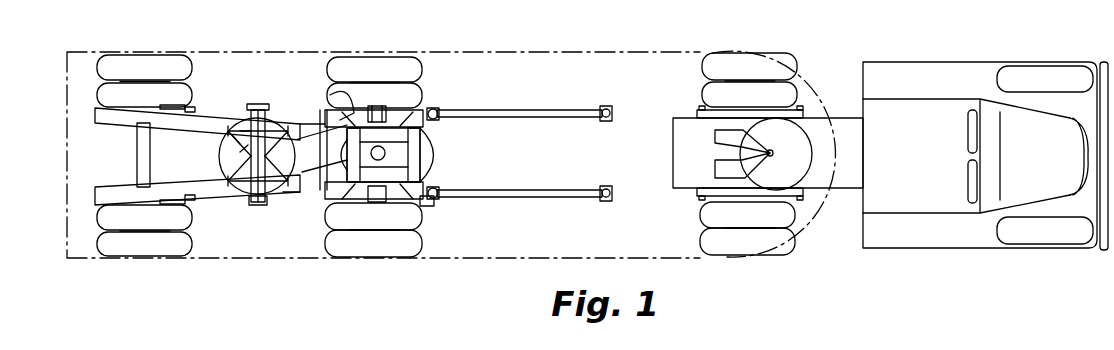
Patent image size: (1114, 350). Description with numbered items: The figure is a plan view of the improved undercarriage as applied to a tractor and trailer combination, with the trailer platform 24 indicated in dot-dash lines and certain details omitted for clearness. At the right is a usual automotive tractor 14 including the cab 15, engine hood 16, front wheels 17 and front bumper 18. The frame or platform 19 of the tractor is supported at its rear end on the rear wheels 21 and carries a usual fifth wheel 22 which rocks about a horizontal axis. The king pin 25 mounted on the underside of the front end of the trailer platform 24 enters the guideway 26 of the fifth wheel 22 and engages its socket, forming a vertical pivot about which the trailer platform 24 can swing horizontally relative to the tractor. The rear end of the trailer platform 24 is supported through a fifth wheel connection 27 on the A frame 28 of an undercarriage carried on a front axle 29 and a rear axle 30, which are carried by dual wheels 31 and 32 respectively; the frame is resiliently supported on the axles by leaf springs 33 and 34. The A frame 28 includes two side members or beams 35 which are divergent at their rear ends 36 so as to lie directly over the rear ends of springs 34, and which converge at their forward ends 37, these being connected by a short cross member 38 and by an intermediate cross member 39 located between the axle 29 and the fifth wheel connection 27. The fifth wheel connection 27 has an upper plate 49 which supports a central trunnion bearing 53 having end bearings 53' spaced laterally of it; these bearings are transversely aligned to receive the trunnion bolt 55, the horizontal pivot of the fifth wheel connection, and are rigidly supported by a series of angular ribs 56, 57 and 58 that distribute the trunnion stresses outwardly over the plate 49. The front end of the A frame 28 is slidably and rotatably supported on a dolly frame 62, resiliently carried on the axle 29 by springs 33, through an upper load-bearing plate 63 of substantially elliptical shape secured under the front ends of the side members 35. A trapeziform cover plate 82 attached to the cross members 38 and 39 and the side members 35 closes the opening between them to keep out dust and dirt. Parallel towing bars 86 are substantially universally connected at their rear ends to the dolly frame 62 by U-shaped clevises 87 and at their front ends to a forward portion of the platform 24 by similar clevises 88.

The automotive tractor 14 is at (978, 62).
The cab 15 is at (936, 156).
The engine hood 16 is at (1022, 156).
The front wheels 17 is at (1040, 66).
The front bumper 18 is at (1100, 250).
The frame or platform 19 is at (843, 182).
The rear wheels 21 is at (792, 60).
The fifth wheel 22 is at (797, 145).
The trailer platform 24 is at (437, 258).
The king pin 25 is at (770, 157).
The guideway 26 is at (742, 147).
The fifth wheel connection 27 is at (217, 153).
The A frame 28 is at (290, 193).
The front axle 29 is at (372, 113).
The rear axle 30 is at (137, 153).
The dual wheels 31 is at (360, 58).
The dual wheels 32 is at (162, 58).
The leaf springs 33 is at (352, 112).
The leaf springs 34 is at (180, 107).
The side members or beams 35 is at (306, 125).
The rear ends 36 is at (95, 115).
The forward ends 37 is at (423, 125).
The short cross member 38 is at (420, 157).
The intermediate cross member 39 is at (352, 165).
The upper plate 49 is at (256, 156).
The central trunnion bearing 53 is at (274, 156).
The end bearings 53' is at (254, 214).
The trunnion bolt 55 is at (258, 104).
The angular rib 56 is at (245, 126).
The angular rib 57 is at (245, 135).
The angular rib 58 is at (240, 150).
The dolly frame 62 is at (432, 204).
The upper load-bearing plate 63 is at (430, 150).
The trapeziform cover plate 82 is at (389, 153).
The parallel towing bars 86 is at (515, 110).
The clevises 87 is at (437, 110).
The clevises 88 is at (607, 106).